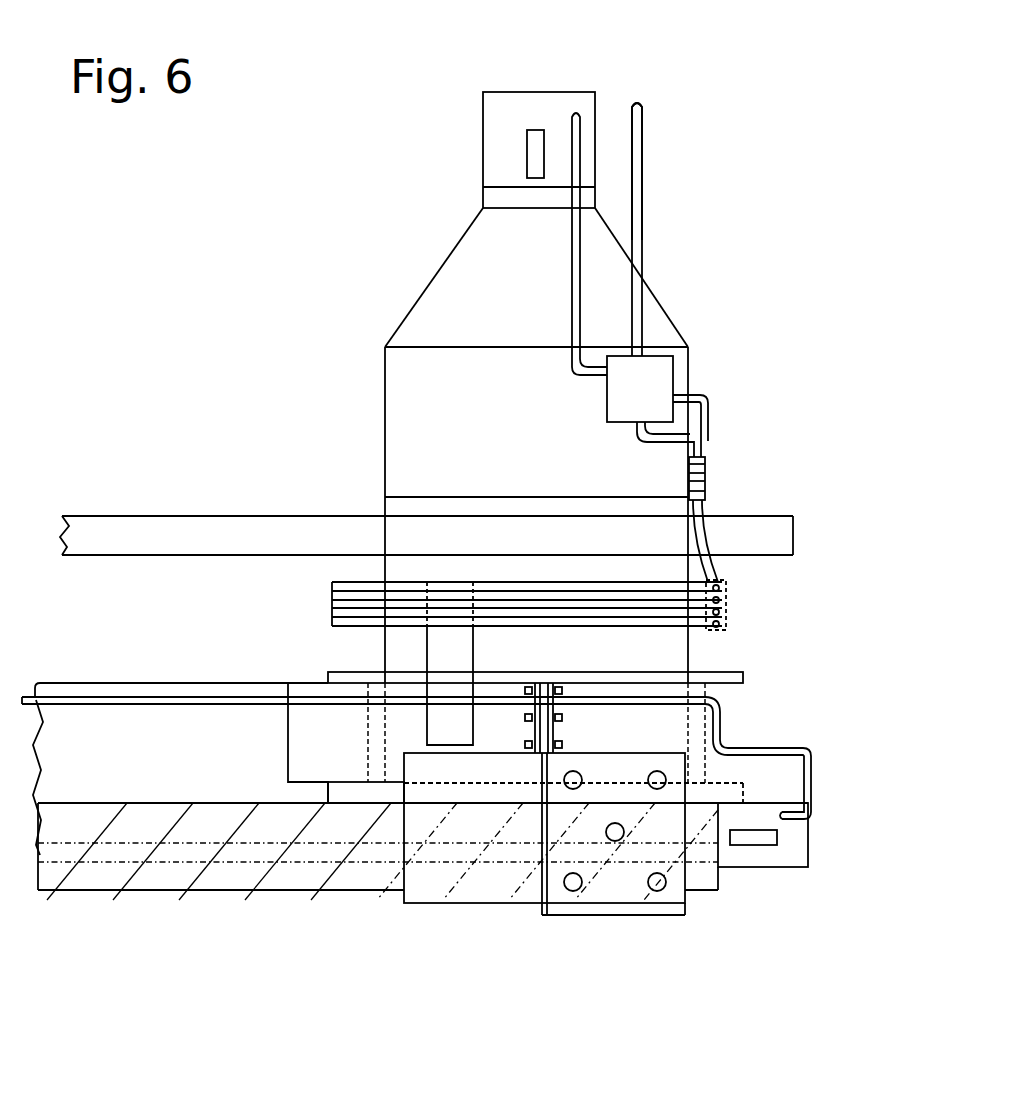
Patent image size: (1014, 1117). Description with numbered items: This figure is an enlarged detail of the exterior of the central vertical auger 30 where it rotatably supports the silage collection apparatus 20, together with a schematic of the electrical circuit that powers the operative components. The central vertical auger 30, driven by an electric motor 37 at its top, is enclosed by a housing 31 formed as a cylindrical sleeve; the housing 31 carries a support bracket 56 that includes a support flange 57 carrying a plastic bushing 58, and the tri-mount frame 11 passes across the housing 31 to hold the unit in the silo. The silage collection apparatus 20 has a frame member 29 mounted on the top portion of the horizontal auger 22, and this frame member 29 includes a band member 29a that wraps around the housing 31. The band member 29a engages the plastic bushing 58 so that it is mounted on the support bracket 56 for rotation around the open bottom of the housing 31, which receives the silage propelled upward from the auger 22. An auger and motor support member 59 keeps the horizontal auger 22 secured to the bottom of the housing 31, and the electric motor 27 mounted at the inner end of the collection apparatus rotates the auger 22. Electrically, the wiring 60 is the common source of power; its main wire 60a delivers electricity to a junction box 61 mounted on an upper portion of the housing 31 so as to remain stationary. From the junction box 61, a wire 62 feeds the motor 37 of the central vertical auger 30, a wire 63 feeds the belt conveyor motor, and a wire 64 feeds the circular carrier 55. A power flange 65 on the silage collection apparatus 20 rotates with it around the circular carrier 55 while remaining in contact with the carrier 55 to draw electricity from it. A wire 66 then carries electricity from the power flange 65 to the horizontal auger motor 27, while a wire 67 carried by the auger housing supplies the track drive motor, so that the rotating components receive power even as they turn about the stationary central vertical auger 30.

The tri-mount frame 11 is at (132, 537).
The silage collection apparatus 20 is at (327, 916).
The auger 22 is at (160, 855).
The electric motor 27 is at (780, 860).
The frame member 29 is at (132, 752).
The band member 29a is at (315, 737).
The central vertical auger 30 is at (417, 184).
The housing 31 is at (385, 425).
The electric motor 37 is at (553, 100).
The circular carrier 55 is at (726, 605).
The support bracket 56 is at (323, 648).
The support flange 57 is at (672, 675).
The plastic bushing 58 is at (370, 755).
The auger and motor support member 59 is at (543, 905).
The wiring 60 is at (684, 136).
The main wire 60a is at (642, 235).
The junction box 61 is at (660, 372).
The wire 62 is at (572, 305).
The wire 63 is at (703, 397).
The wire 64 is at (709, 441).
The power flange 65 is at (458, 658).
The wire 66 is at (723, 737).
The wire 67 is at (153, 703).